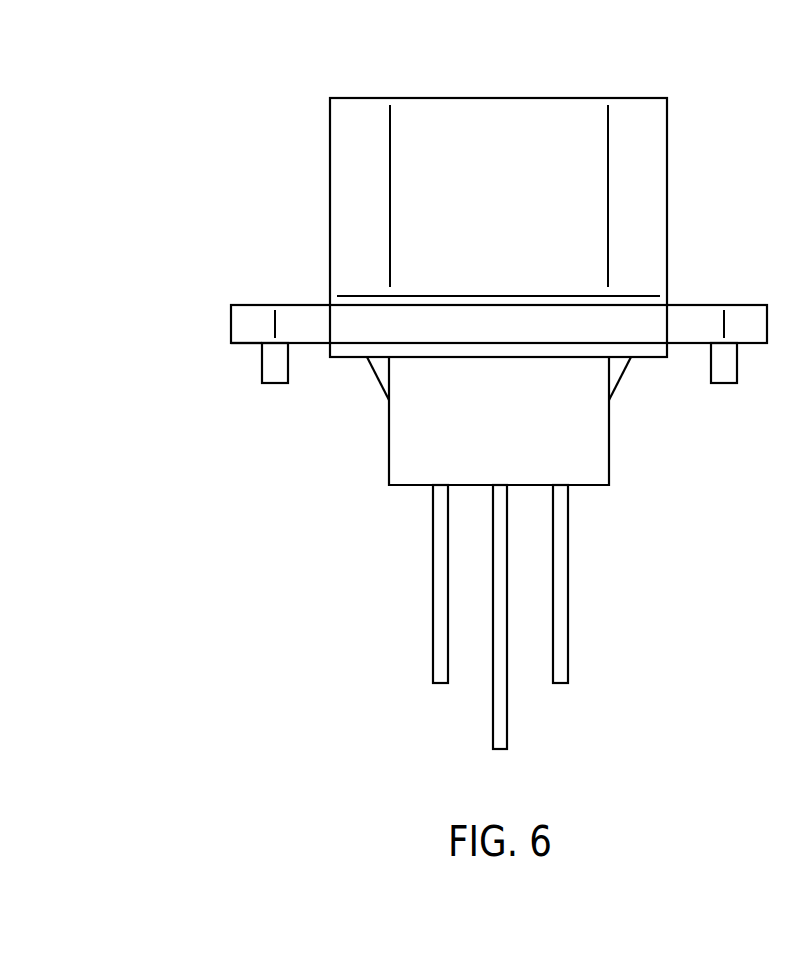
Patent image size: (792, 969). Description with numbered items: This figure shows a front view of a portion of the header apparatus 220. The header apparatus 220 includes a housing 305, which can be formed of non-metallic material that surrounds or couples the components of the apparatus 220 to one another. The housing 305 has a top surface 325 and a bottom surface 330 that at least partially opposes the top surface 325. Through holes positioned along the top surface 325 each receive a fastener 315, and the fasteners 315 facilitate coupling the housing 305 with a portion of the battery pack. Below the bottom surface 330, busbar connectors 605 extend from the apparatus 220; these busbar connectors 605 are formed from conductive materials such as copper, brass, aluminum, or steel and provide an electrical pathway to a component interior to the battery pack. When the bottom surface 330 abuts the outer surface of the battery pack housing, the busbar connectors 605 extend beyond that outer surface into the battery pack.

The header apparatus 220 is at (116, 91).
The housing 305 is at (306, 168).
The top surface 325 is at (238, 299).
The bottom surface 330 is at (237, 356).
The fastener 315 is at (273, 363).
The busbar connector 605 is at (569, 655).